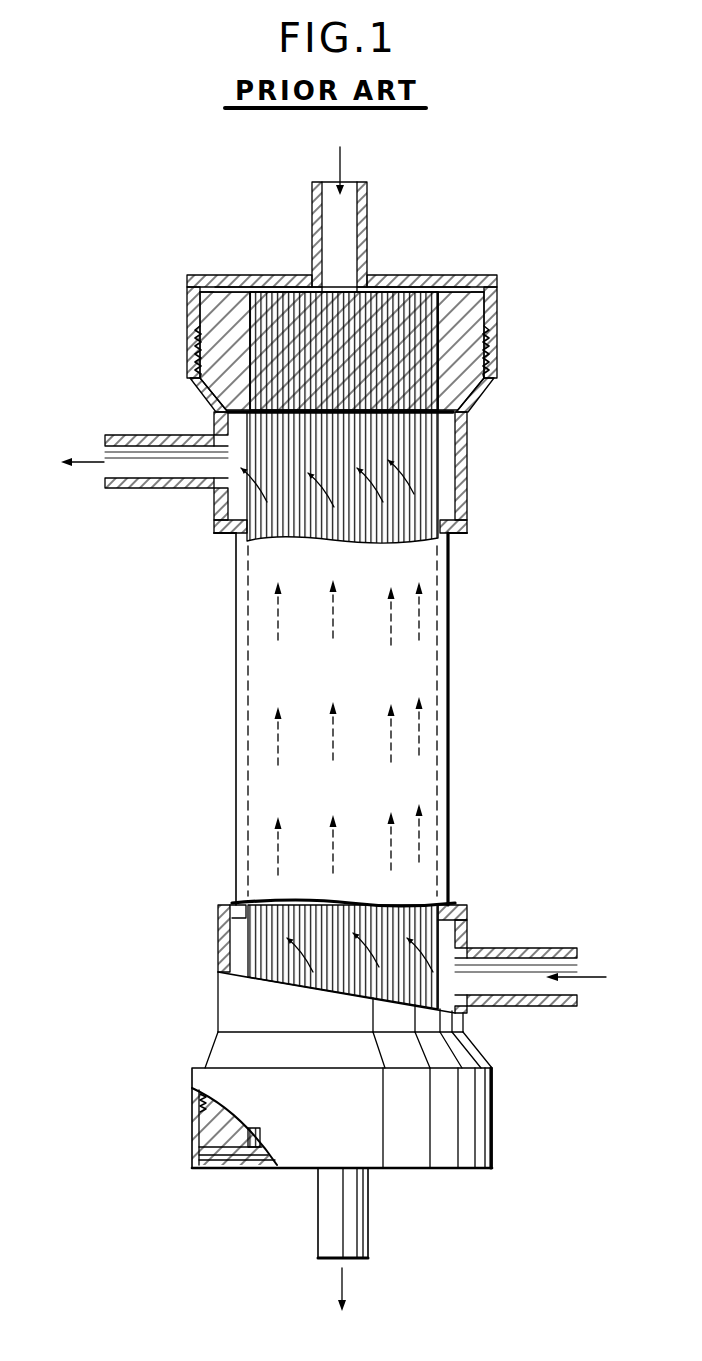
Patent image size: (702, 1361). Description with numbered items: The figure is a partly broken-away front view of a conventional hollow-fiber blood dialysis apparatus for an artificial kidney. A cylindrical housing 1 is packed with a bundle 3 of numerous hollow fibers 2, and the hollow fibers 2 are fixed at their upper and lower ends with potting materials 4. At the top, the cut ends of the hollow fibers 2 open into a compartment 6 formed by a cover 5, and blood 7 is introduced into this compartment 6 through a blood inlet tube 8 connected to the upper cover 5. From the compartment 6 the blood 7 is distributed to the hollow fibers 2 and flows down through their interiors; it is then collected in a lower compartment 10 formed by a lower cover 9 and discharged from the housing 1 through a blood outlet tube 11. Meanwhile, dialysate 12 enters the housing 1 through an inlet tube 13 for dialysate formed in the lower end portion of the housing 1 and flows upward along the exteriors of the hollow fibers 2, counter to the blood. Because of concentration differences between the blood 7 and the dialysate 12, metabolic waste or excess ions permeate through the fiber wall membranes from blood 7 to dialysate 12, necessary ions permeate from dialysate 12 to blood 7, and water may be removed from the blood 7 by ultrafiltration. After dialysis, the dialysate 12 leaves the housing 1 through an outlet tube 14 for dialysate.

The housing 1 is at (449, 618).
The hollow fibers 2 is at (427, 447).
The bundle 3 is at (442, 488).
The potting materials 4 is at (462, 311).
The cover 5 is at (283, 283).
The compartment 6 is at (388, 291).
The blood 7 is at (340, 148).
The blood inlet tube 8 is at (368, 203).
The lower cover 9 is at (244, 1166).
The lower compartment 10 is at (262, 1164).
The blood outlet tube 11 is at (352, 1203).
The dialysate 12 is at (87, 466).
The inlet tube for dialysate 13 is at (505, 948).
The outlet tube for dialysate 14 is at (156, 438).